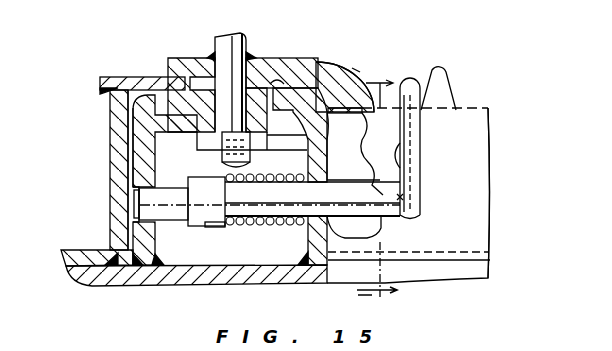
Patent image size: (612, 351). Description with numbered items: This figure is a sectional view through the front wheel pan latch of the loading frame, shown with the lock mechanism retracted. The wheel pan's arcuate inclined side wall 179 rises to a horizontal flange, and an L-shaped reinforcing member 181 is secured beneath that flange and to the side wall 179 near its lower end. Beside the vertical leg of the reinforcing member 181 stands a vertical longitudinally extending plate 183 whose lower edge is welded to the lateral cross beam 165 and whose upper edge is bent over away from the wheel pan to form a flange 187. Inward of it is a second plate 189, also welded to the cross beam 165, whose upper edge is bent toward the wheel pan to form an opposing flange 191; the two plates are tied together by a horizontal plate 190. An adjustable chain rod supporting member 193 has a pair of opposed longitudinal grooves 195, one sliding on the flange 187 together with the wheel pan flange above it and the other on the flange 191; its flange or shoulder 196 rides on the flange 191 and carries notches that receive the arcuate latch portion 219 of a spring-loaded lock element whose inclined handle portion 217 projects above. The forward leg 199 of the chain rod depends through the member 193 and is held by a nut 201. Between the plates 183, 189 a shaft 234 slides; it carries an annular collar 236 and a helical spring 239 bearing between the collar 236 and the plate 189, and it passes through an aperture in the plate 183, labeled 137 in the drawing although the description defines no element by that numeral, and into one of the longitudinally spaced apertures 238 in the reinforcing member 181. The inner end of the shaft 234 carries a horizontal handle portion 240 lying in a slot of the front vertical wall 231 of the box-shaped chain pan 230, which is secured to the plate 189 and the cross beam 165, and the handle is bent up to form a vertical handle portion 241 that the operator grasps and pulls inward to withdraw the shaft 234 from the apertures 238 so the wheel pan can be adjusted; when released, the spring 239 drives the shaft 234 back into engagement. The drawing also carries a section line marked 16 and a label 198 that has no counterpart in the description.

The inclined side wall 179 is at (103, 77).
The L shaped reinforcing member 181 is at (88, 250).
The lateral cross beam 165 is at (113, 287).
The longitudinally spaced apertures 238 is at (130, 186).
The flange 187 is at (158, 92).
The vertical longitudinally extending plate 183 is at (155, 250).
The plunger bore 137 is at (150, 185).
The block 198 is at (170, 58).
The longitudinal grooves 195 is at (172, 62).
The nut 201 is at (253, 155).
The forward leg 199 is at (252, 58).
The adjustable chain rod supporting member 193 is at (260, 72).
The flange or shoulder 196 is at (300, 58).
The flange 191 is at (347, 54).
The arcuate latch portion 219 is at (360, 67).
The section line 16- 16 is at (394, 82).
The chain pan 230 is at (489, 220).
The second plate 189 is at (328, 160).
The front vertical wall 231 is at (489, 192).
The horizontal plate 190 is at (178, 177).
The shaft 234 is at (158, 226).
The annular collar 236 is at (217, 226).
The horizontal handle portion 240 is at (421, 188).
The helical spring 239 is at (255, 226).
The vertical handle portion 241 is at (418, 132).
The inclined handle portion 217 is at (445, 80).